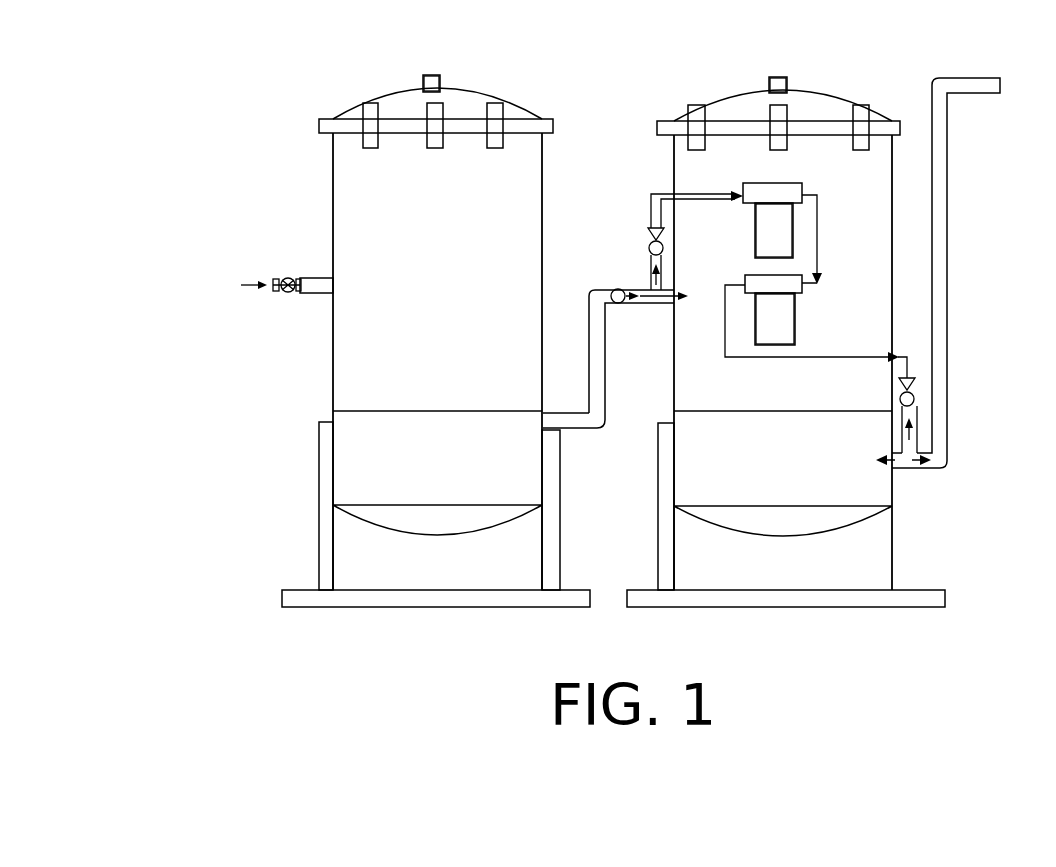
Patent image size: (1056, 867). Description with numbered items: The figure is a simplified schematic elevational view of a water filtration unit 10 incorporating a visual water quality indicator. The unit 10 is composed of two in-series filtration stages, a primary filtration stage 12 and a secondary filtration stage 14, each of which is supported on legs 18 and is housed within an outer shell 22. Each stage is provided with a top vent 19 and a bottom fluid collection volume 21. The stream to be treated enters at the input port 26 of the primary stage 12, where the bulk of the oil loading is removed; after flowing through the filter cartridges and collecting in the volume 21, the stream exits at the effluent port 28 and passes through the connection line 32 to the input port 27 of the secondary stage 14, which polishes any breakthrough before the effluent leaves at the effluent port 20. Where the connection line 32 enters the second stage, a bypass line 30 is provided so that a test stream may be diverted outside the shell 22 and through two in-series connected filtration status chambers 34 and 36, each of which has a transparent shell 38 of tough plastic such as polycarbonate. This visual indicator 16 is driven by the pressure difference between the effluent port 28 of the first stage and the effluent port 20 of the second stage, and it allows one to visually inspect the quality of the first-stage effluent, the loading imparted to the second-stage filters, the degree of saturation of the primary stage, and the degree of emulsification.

The unit 10 is at (582, 97).
The primary filtration stage 12 is at (284, 437).
The secondary filtration stage 14 is at (925, 260).
The visual indicator 16 is at (705, 272).
The legs 18 is at (319, 523).
The top vent 19 is at (431, 75).
The effluent port of the second stage 20 is at (920, 469).
The bottom fluid collection volume 21 is at (358, 470).
The outer shell 22 is at (333, 193).
The input port 26 is at (310, 277).
The input port of stage 14 27 is at (647, 305).
The effluent port of the first stage 28 is at (566, 431).
The bypass line 30 is at (658, 192).
The connection line 32 is at (603, 393).
The first filtration status chamber 34 is at (770, 225).
The second filtration status chamber 36 is at (782, 320).
The transparent shell 38 is at (755, 227).